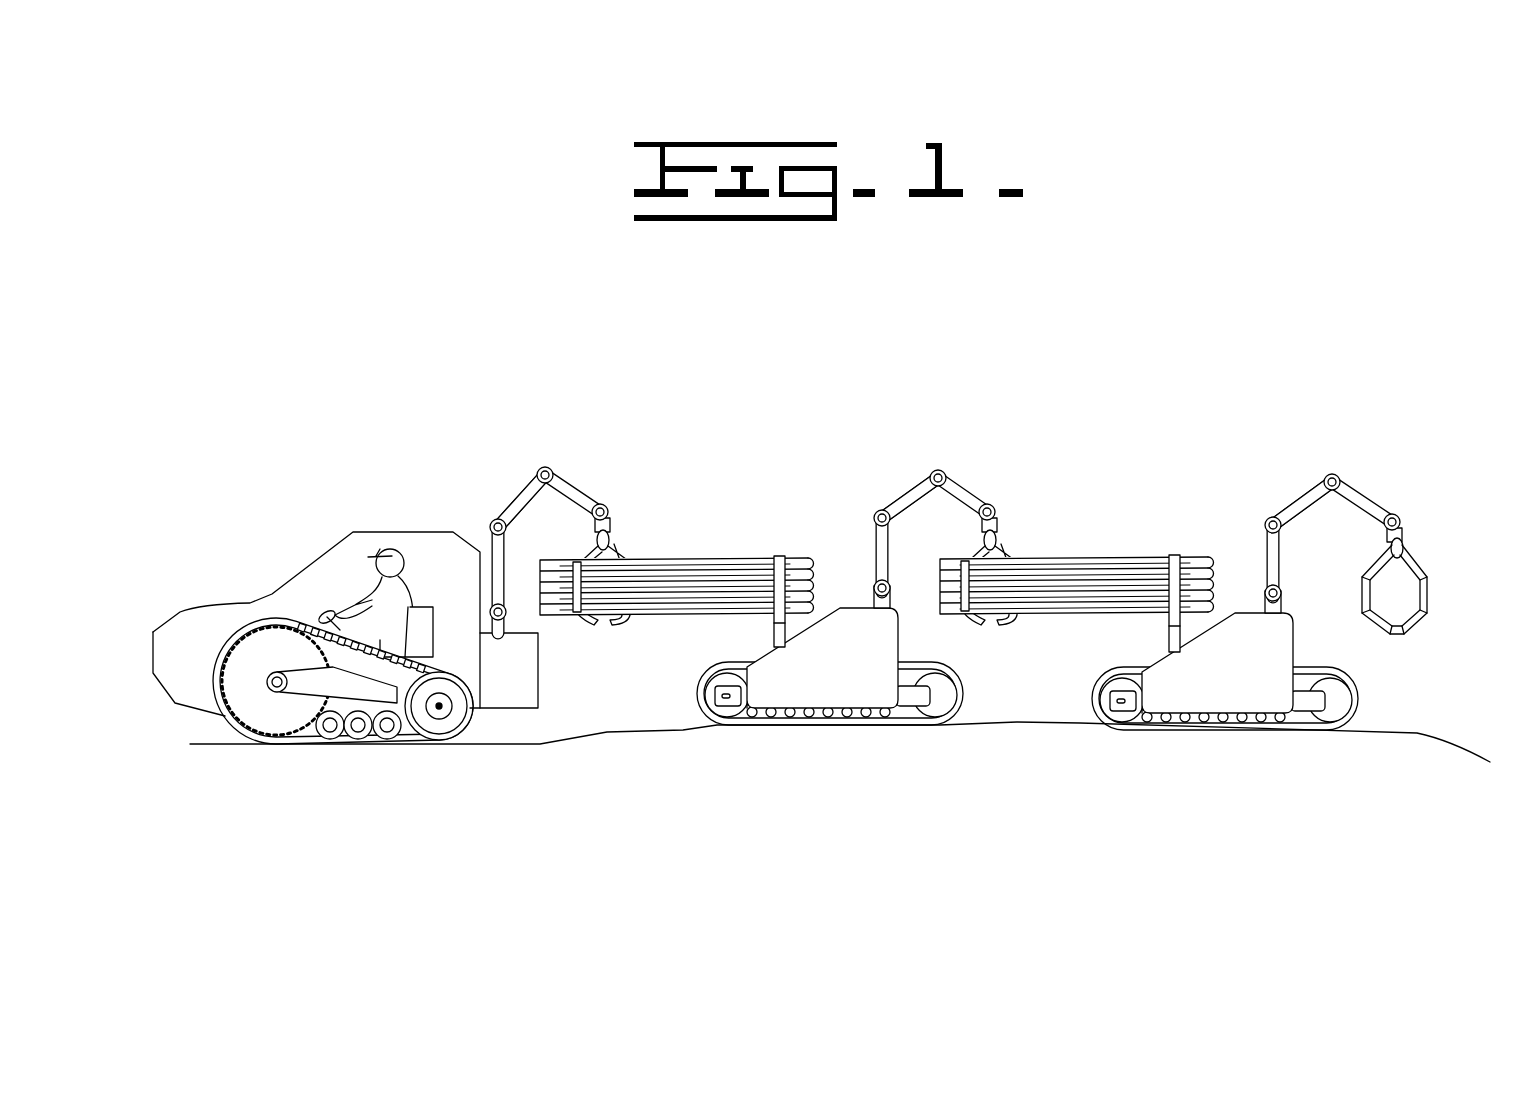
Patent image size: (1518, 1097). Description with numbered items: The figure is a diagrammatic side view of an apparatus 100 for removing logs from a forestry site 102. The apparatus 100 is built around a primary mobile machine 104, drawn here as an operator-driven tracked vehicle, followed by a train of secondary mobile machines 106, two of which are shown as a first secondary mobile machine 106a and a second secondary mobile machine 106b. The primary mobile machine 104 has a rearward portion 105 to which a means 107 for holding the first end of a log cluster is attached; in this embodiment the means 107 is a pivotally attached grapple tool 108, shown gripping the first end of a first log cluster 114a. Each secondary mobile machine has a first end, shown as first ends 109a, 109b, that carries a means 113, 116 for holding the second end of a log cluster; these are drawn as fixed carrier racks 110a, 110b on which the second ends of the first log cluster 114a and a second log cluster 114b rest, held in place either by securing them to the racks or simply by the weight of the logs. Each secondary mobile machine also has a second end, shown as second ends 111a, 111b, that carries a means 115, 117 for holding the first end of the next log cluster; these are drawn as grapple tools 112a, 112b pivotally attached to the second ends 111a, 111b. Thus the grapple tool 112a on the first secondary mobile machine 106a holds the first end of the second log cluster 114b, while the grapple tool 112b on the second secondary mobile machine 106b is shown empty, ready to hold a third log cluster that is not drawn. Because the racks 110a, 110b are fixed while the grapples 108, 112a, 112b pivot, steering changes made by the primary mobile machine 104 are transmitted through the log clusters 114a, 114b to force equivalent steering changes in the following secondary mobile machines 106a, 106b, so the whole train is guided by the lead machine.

The apparatus 100 is at (356, 326).
The forestry site 102 is at (576, 400).
The primary mobile machine 104 is at (322, 555).
The rearward portion 105 is at (540, 687).
The secondary mobile machine 106 is at (1032, 407).
The first secondary mobile machine 106a is at (702, 717).
The second secondary mobile machine 106b is at (1092, 707).
The means for holding a first end of a log cluster 107 is at (480, 475).
The grapple tool 108 is at (513, 502).
The first end of first secondary mobile machine 109a is at (768, 647).
The first end of second secondary mobile machine 109b is at (1152, 653).
The fixed carrier rack 110a is at (778, 557).
The fixed carrier rack 110b is at (1173, 557).
The second end of first secondary mobile machine 111a is at (898, 645).
The second end of second secondary mobile machine 111b is at (1297, 660).
The grapple tool 112a is at (905, 493).
The grapple tool 112b is at (1297, 498).
The means for holding a second end of a log cluster 113 is at (767, 503).
The first log cluster 114a is at (678, 560).
The second log cluster 114b is at (1092, 553).
The means for holding a first end of a log cluster 115 is at (928, 455).
The means for holding a second end of a log cluster 116 is at (1163, 513).
The means for holding a first end of a log cluster 117 is at (1322, 447).